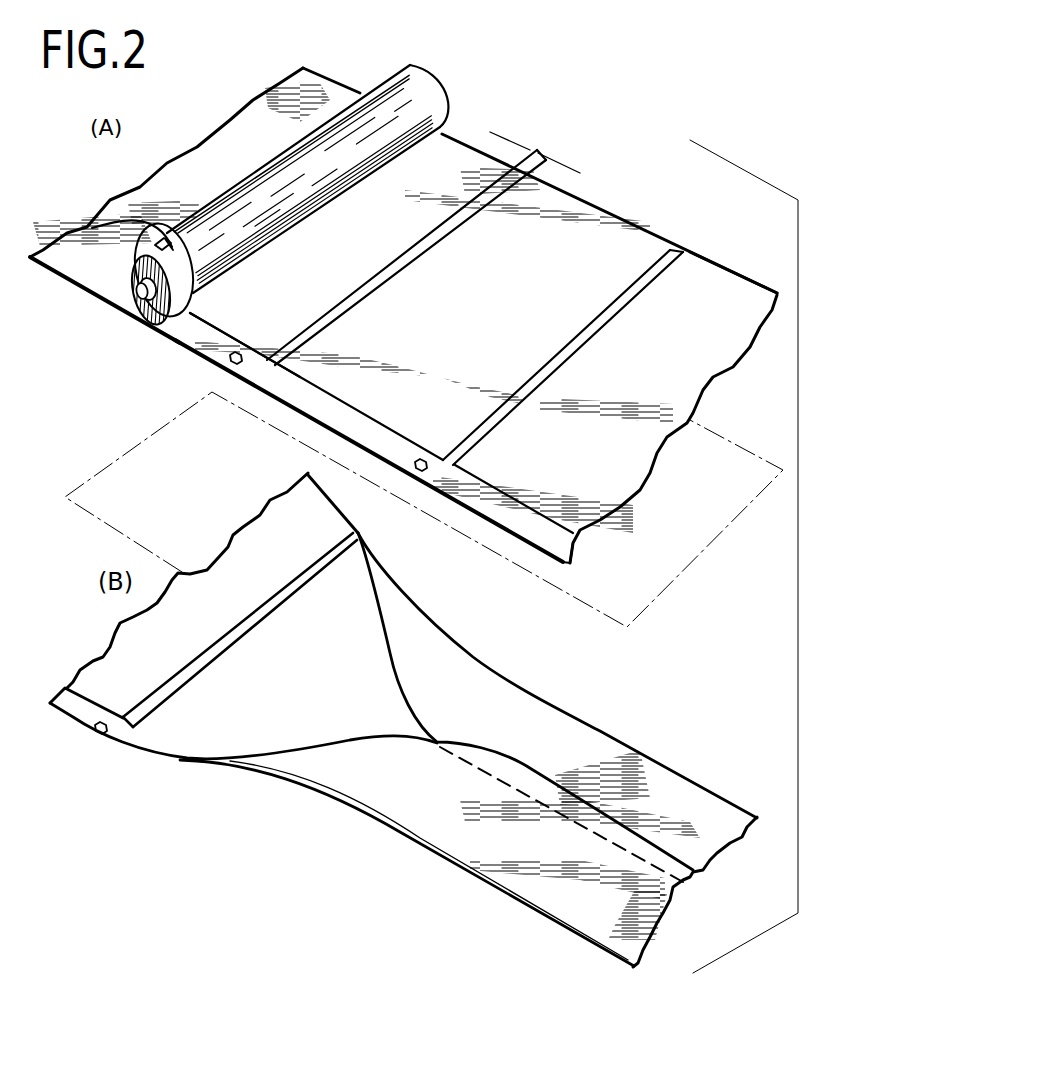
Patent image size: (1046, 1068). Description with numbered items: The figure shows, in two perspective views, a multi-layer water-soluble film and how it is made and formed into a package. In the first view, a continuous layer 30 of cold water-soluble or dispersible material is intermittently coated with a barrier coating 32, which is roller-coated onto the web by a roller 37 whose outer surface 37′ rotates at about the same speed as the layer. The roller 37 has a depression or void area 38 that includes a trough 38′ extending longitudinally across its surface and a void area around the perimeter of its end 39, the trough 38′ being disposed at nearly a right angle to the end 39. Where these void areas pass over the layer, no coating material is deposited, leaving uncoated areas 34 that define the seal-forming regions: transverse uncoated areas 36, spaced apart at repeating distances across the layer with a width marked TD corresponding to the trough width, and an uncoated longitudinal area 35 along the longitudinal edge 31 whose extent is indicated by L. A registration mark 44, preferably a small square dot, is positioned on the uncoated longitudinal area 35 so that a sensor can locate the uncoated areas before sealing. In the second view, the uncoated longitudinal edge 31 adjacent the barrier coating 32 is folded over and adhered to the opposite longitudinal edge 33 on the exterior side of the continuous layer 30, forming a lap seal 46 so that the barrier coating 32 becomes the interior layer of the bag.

In FIG. 2A, the continuous layer 30 is at (316, 90).
In FIG. 2B, the continuous layer 30 is at (610, 760).
In FIG. 2A, the longitudinal edge 31 is at (457, 506).
In FIG. 2A, the barrier coating 32 is at (613, 245).
In FIG. 2B, the barrier coating 32 is at (262, 715).
In FIG. 2A, the longitudinal edge 33 is at (716, 264).
In FIG. 2A, the uncoated areas 34 is at (507, 520).
In FIG. 2A, the uncoated longitudinal area 35 is at (188, 330).
In FIG. 2B, the uncoated longitudinal area 35 is at (77, 705).
In FIG. 2A, the transverse uncoated areas 36 is at (498, 150).
In FIG. 2B, the transverse uncoated areas 36 is at (165, 688).
In FIG. 2A, the roller 37 is at (112, 305).
In FIG. 2A, the outer surface of roller 37′ is at (447, 97).
In FIG. 2A, the depression or void area 38 is at (224, 184).
In FIG. 2A, the trough 38′ is at (410, 67).
In FIG. 2A, the end of roller 39 is at (132, 305).
In FIG. 2A, the registration mark 44 is at (231, 362).
In FIG. 2B, the registration mark 44 is at (100, 733).
In FIG. 2B, the lap seal 46 is at (673, 877).
In FIG. 2A, the transverse direction dimension TD is at (526, 143).
In FIG. 2A, the length dimension L is at (548, 153).